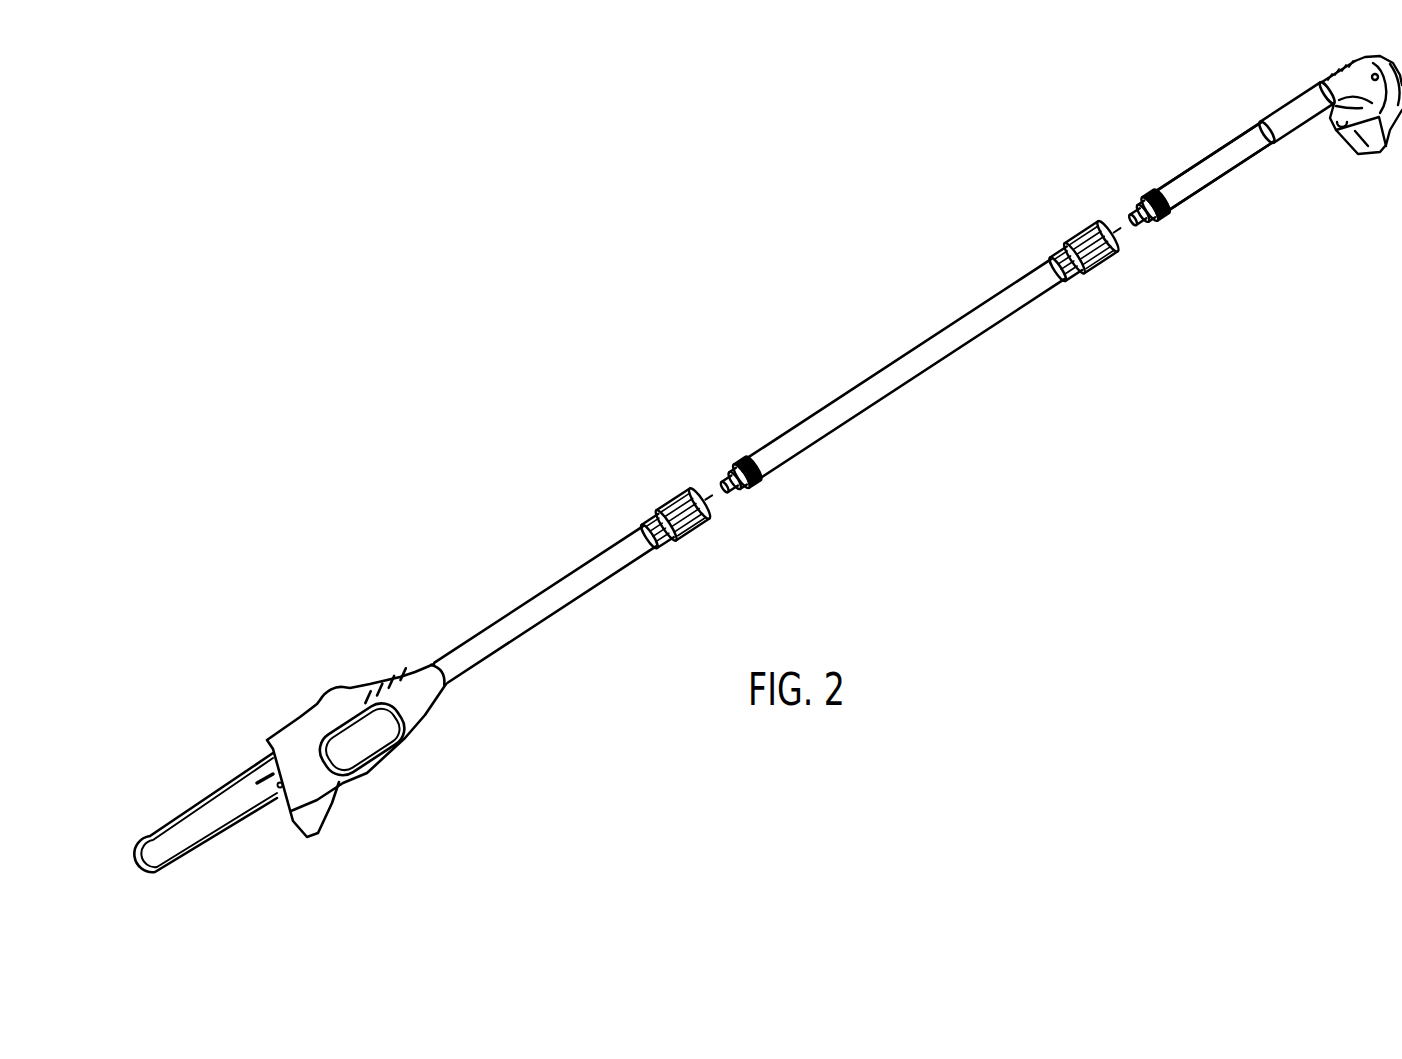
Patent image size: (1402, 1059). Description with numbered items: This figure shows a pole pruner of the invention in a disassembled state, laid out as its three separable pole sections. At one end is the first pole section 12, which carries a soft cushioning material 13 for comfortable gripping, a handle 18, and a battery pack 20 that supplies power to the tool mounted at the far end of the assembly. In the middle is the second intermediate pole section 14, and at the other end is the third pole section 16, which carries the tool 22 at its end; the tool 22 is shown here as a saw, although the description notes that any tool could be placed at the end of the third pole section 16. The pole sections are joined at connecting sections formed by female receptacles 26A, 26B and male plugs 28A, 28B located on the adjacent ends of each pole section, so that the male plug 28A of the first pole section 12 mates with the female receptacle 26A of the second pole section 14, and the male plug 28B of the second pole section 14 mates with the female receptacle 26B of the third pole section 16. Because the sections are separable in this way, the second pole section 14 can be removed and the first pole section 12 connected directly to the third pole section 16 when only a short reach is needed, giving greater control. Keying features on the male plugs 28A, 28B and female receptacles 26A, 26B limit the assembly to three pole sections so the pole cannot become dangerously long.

The first pole section 12 is at (1232, 171).
The soft cushioning material 13 is at (1212, 157).
The second intermediate pole section 14 is at (917, 375).
The third pole section 16 is at (552, 616).
The handle 18 is at (1333, 76).
The battery pack 20 is at (1370, 155).
The tool 22 is at (297, 718).
The female receptacle 26A is at (1083, 230).
The female receptacle 26B is at (673, 490).
The male plug 28A is at (1150, 188).
The male plug 28B is at (745, 456).